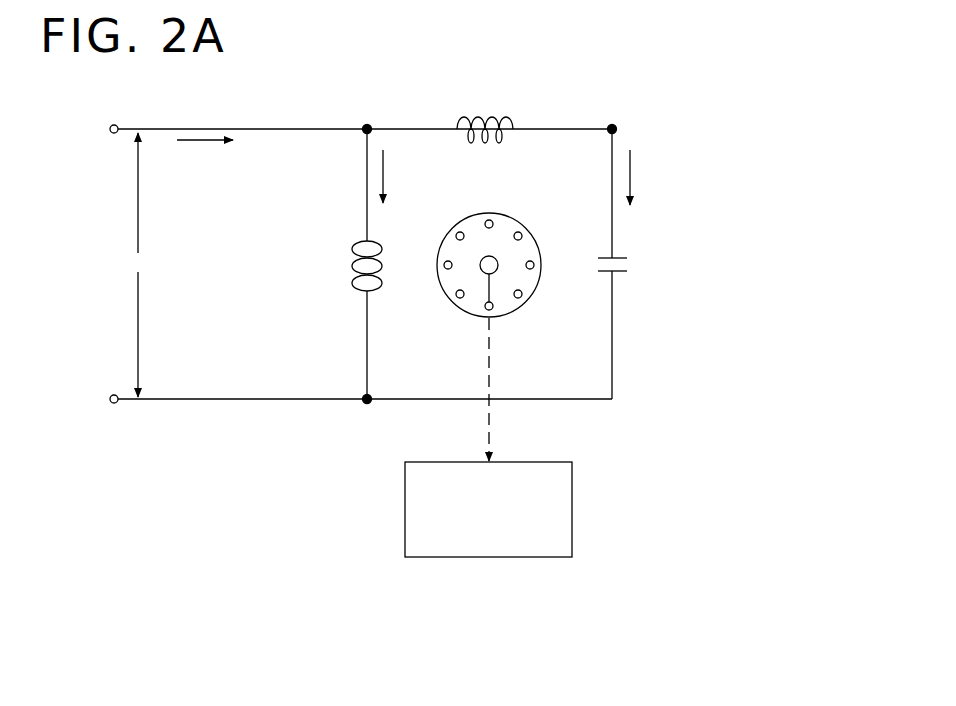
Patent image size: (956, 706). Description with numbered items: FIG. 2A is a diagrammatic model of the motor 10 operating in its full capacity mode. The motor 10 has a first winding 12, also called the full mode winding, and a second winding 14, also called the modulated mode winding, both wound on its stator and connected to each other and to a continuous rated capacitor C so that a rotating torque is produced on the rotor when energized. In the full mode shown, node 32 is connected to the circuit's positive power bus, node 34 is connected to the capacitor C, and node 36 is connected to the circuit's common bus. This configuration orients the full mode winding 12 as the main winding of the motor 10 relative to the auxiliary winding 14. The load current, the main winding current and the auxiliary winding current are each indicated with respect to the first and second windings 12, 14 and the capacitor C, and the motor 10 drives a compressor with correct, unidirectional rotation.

The motor 10 is at (614, 88).
The first winding 12 is at (356, 243).
The second winding 14 is at (497, 141).
The node 32 is at (365, 132).
The node 34 is at (615, 128).
The node 36 is at (369, 397).